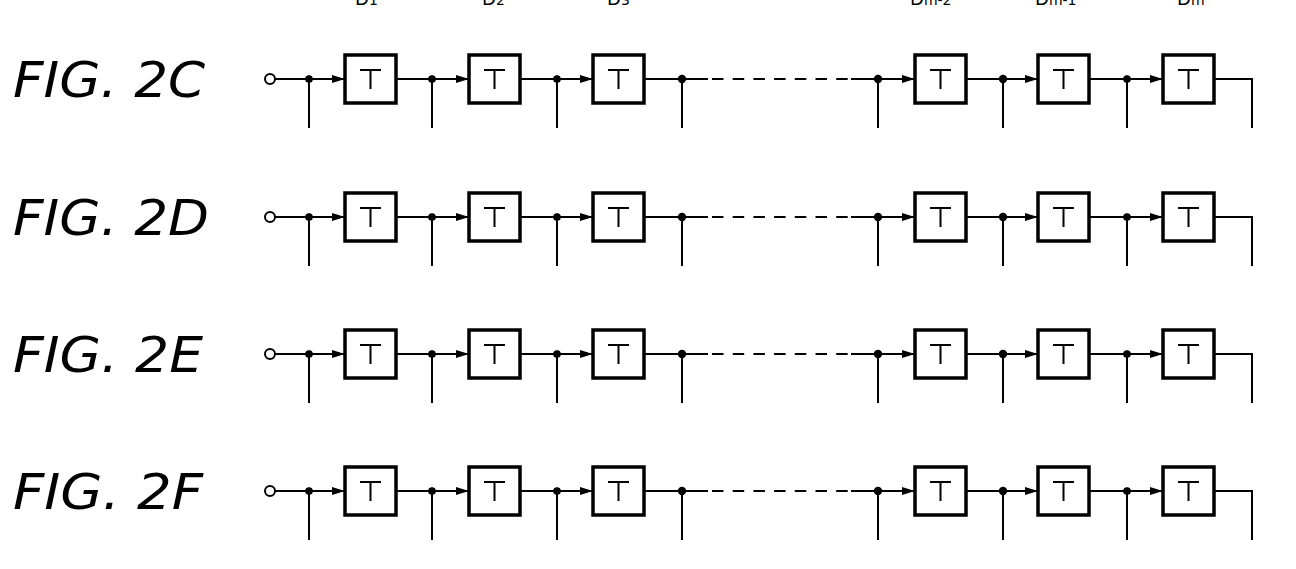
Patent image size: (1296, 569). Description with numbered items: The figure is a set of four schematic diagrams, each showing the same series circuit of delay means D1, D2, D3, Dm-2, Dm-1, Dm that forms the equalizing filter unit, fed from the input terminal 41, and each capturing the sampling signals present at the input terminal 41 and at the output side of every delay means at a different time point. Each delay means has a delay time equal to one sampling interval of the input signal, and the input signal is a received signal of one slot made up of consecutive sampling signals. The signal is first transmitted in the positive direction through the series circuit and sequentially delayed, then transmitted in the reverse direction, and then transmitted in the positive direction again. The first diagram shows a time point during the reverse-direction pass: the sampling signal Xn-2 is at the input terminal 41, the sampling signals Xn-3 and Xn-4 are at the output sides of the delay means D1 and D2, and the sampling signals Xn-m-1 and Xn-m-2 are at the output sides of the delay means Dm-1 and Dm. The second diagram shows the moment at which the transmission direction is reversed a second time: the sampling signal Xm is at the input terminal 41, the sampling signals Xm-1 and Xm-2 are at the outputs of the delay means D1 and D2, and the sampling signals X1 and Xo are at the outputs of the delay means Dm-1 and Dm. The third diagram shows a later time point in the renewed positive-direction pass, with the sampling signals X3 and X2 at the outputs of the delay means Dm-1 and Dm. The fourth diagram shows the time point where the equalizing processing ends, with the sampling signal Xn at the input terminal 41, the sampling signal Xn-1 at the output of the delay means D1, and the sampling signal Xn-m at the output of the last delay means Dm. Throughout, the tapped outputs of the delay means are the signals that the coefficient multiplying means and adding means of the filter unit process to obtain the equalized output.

In FIG. 2C, the input terminal 41 is at (270, 74).
In FIG. 2D, the input terminal 41 is at (258, 191).
In FIG. 2E, the input terminal 41 is at (258, 328).
In FIG. 2F, the input terminal 41 is at (258, 465).
In FIG. 2C, the delay means D1 is at (368, 103).
In FIG. 2D, the delay means D1 is at (370, 240).
In FIG. 2E, the delay means D1 is at (370, 377).
In FIG. 2F, the delay means D1 is at (370, 514).
In FIG. 2C, the delay means D2 is at (493, 103).
In FIG. 2D, the delay means D2 is at (494, 240).
In FIG. 2E, the delay means D2 is at (494, 377).
In FIG. 2F, the delay means D2 is at (494, 514).
In FIG. 2C, the delay means D3 is at (618, 103).
In FIG. 2D, the delay means D3 is at (618, 240).
In FIG. 2E, the delay means D3 is at (618, 377).
In FIG. 2F, the delay means D3 is at (618, 514).
In FIG. 2C, the delay means Dm-2 is at (940, 103).
In FIG. 2D, the delay means Dm-2 is at (938, 240).
In FIG. 2E, the delay means Dm-2 is at (938, 377).
In FIG. 2F, the delay means Dm-2 is at (938, 514).
In FIG. 2C, the delay means Dm-1 is at (1063, 103).
In FIG. 2D, the delay means Dm-1 is at (1062, 240).
In FIG. 2E, the delay means Dm-1 is at (1062, 377).
In FIG. 2F, the delay means Dm-1 is at (1062, 514).
In FIG. 2C, the delay means Dm is at (1190, 103).
In FIG. 2D, the delay means Dm is at (1188, 240).
In FIG. 2E, the delay means Dm is at (1188, 377).
In FIG. 2F, the delay means Dm is at (1188, 514).
In FIG. 2C, the sampling signal Xn-2 is at (293, 77).
In FIG. 2F, the sampling signal Xn-2 is at (542, 482).
In FIG. 2C, the sampling signal Xn-3 is at (415, 77).
In FIG. 2C, the sampling signal Xn-4 is at (542, 77).
In FIG. 2C, the sampling signal Xn-m-1 is at (1110, 77).
In FIG. 2C, the sampling signal Xn-m-2 is at (1233, 77).
In FIG. 2D, the sampling signal Xm is at (299, 208).
In FIG. 2E, the sampling signal Xm is at (539, 345).
In FIG. 2D, the sampling signal Xm-1 is at (418, 208).
In FIG. 2D, the sampling signal Xm-2 is at (545, 208).
In FIG. 2D, the sampling signal X1 is at (1108, 208).
In FIG. 2D, the sampling signal Xo is at (1232, 208).
In FIG. 2E, the sampling signal X3 is at (1110, 345).
In FIG. 2E, the sampling signal X2 is at (1233, 345).
In FIG. 2F, the sampling signal Xn is at (297, 482).
In FIG. 2F, the sampling signal Xn-1 is at (415, 482).
In FIG. 2F, the sampling signal Xn-m is at (1235, 482).